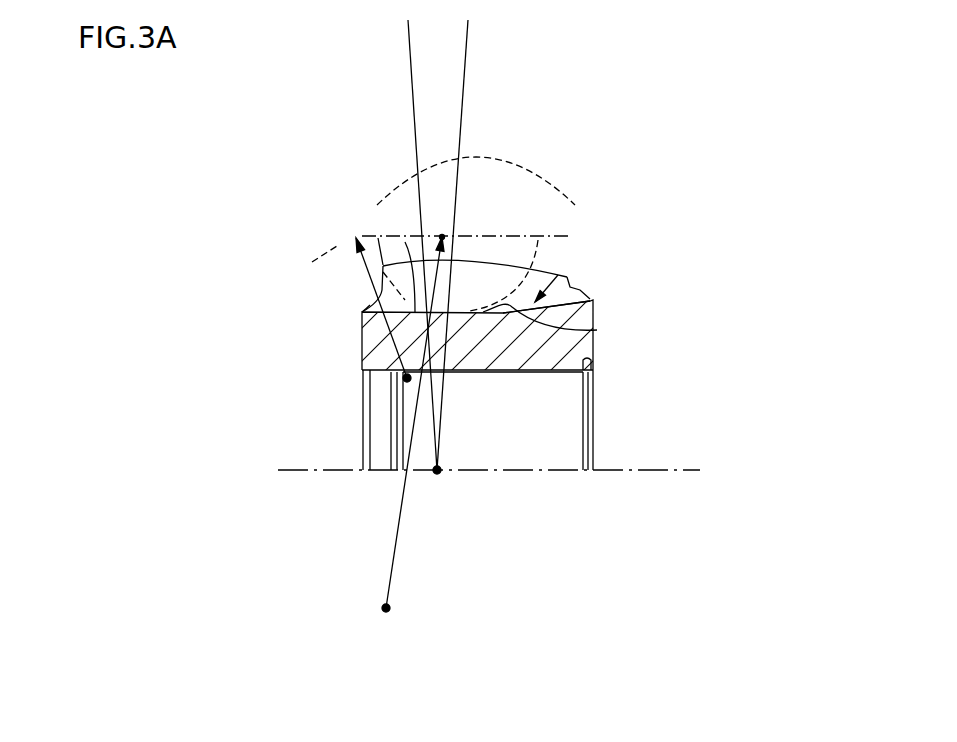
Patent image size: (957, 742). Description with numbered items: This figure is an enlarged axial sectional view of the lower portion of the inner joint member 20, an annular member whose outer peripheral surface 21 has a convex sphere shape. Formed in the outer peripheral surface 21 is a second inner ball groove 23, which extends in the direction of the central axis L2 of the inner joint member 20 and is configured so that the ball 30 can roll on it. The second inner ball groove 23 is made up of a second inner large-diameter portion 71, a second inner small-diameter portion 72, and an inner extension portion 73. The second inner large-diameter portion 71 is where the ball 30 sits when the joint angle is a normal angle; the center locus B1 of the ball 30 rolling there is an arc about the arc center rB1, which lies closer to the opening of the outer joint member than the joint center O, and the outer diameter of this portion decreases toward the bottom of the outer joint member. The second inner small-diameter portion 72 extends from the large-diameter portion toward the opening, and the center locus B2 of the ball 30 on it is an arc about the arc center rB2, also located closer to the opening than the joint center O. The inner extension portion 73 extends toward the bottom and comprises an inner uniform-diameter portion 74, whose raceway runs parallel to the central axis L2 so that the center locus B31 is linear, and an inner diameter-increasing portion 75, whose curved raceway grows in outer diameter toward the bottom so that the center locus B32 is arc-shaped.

The inner joint member 20 is at (652, 218).
The outer peripheral surface 21 is at (405, 242).
The second inner ball groove 23 is at (557, 273).
The ball 30 is at (538, 262).
The second inner large-diameter portion 71 is at (378, 238).
The second inner small-diameter portion 72 is at (362, 312).
The inner extension portion 73 is at (658, 262).
The inner uniform-diameter portion 74 is at (597, 330).
The inner diameter-increasing portion 75 is at (592, 298).
The center locus of the ball B1 is at (442, 235).
The center locus of the ball B2 is at (349, 243).
The center locus of the ball B31 is at (503, 237).
The center locus of the ball B32 is at (517, 237).
The arc center rB1 is at (382, 608).
The arc center rB2 is at (404, 379).
The joint center O is at (438, 472).
The central axis L2 is at (645, 468).